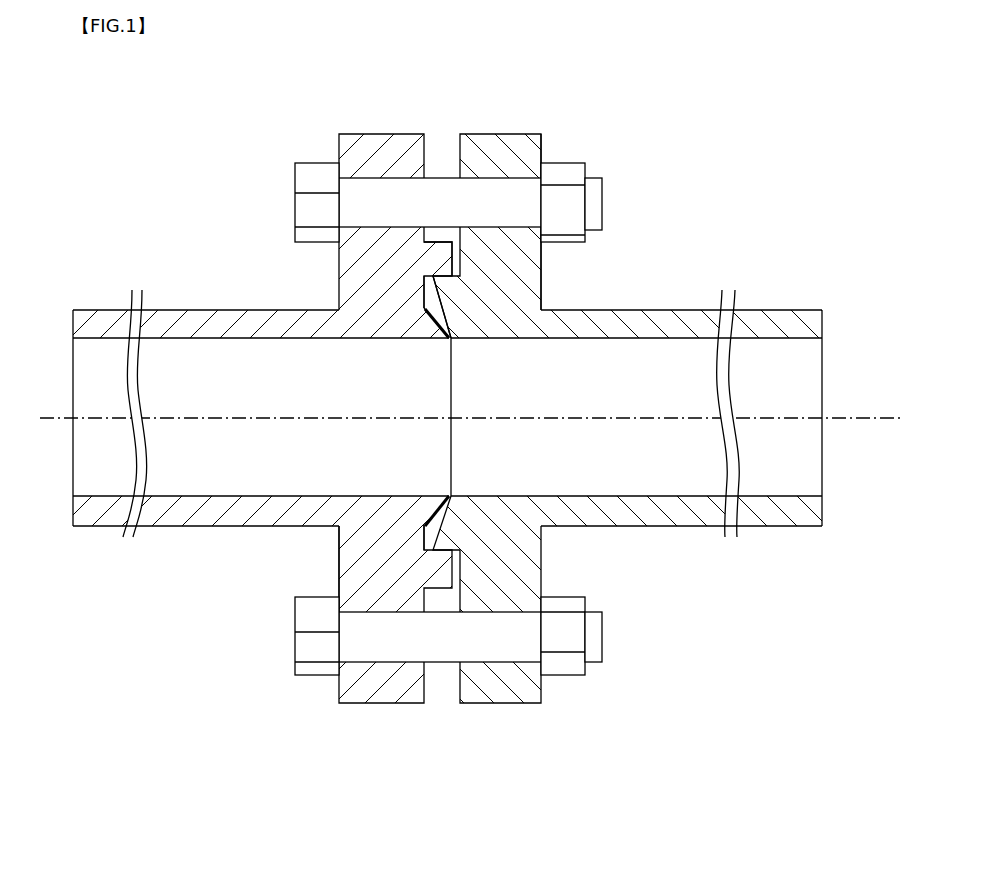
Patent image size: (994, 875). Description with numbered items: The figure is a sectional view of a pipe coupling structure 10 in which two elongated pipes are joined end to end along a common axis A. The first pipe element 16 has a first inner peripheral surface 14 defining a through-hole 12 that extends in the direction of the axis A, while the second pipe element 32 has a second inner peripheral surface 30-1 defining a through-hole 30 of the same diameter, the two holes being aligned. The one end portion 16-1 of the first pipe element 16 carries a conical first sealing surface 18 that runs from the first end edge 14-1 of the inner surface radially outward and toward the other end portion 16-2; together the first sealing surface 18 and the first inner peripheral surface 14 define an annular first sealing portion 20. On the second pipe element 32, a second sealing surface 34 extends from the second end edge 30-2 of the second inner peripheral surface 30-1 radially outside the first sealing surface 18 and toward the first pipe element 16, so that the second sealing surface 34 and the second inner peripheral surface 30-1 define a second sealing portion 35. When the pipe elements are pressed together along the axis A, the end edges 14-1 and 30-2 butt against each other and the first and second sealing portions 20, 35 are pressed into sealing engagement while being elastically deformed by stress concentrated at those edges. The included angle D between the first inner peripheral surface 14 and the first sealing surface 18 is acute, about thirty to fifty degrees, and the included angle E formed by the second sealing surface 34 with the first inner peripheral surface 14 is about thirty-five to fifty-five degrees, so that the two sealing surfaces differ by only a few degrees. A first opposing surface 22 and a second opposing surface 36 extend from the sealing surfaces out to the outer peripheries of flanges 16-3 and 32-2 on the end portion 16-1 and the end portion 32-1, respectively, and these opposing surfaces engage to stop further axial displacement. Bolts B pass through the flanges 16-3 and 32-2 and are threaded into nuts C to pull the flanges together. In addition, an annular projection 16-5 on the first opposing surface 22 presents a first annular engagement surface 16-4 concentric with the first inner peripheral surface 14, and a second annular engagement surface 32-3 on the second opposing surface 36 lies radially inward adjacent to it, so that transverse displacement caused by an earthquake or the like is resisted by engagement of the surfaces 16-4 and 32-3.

The pipe coupling structure 10 is at (471, 396).
The through-hole 12 is at (270, 420).
The first inner peripheral surface 14 is at (182, 332).
The first end edge 14-1 is at (456, 386).
The first pipe element 16 is at (321, 420).
The one end portion 16-1 is at (327, 535).
The other end portion 16-2 is at (76, 531).
The flange 16-3 is at (353, 133).
The first annular engagement surface 16-4 is at (426, 553).
The annular projection 16-5 is at (371, 653).
The first sealing surface 18 is at (430, 311).
The first sealing portion 20 is at (436, 338).
The first opposing surface 22 is at (433, 243).
The through-hole 30 is at (547, 403).
The second inner peripheral surface 30-1 is at (673, 342).
The second end edge 30-2 is at (451, 447).
The second pipe element 32 is at (590, 403).
The end portion 32-1 is at (598, 274).
The flange 32-2 is at (488, 134).
The second annular engagement surface 32-3 is at (442, 565).
The second sealing surface 34 is at (430, 522).
The second sealing portion 35 is at (458, 333).
The second opposing surface 36 is at (433, 262).
The axis A is at (878, 418).
The bolts B is at (318, 160).
The nuts C is at (567, 163).
The included angle D is at (428, 512).
The included angle E is at (434, 500).